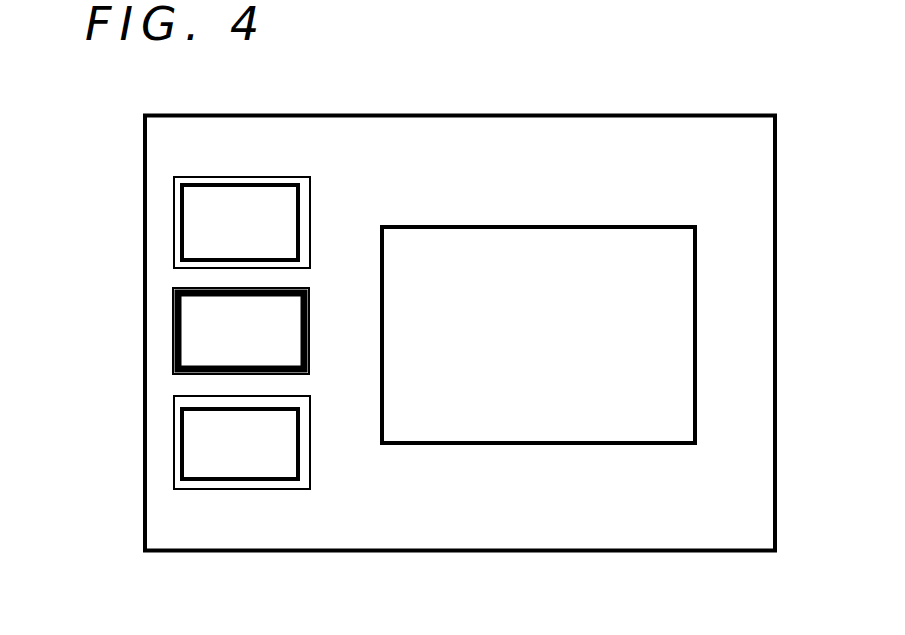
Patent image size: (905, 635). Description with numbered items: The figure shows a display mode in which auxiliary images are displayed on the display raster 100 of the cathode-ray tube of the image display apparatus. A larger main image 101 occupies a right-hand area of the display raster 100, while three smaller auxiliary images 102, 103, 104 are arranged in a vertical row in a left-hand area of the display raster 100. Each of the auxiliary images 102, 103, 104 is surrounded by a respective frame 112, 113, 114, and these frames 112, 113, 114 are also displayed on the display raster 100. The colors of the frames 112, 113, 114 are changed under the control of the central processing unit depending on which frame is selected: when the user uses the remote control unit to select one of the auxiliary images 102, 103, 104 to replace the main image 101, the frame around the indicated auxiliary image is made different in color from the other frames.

The display raster 100 is at (614, 552).
The main image 101 is at (697, 370).
The auxiliary image 102 is at (203, 238).
The auxiliary image 103 is at (193, 339).
The auxiliary image 104 is at (198, 452).
The frame 112 is at (172, 205).
The frame 113 is at (172, 315).
The frame 114 is at (172, 432).